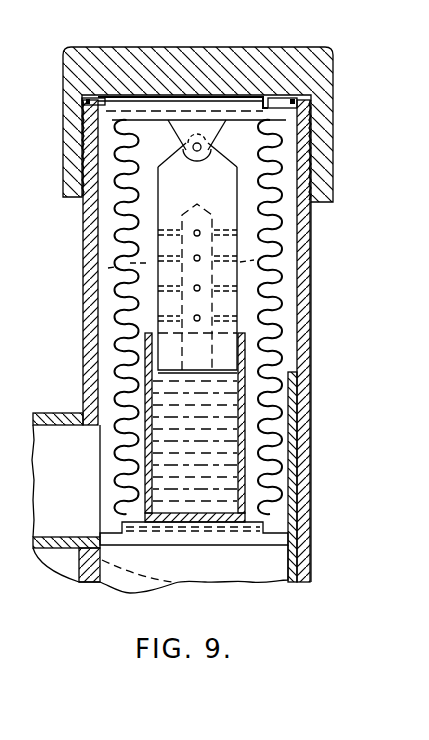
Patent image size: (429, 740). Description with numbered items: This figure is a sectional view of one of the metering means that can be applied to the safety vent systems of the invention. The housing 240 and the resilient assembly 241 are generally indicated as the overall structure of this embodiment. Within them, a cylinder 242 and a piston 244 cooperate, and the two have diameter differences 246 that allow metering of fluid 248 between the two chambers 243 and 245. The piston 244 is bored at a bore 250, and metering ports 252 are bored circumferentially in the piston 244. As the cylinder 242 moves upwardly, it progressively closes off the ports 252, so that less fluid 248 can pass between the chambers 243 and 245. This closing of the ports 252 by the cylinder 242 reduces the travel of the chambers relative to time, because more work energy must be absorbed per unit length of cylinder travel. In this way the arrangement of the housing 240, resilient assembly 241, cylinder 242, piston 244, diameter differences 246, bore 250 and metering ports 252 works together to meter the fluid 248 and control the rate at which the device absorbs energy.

The housing 240 is at (337, 213).
The resilient assembly 241 is at (281, 280).
The cylinder 242 is at (247, 458).
The chamber 243 is at (213, 417).
The piston 244 is at (158, 212).
The chamber 245 is at (277, 165).
The diameter differences 246 is at (243, 352).
The fluid 248 is at (132, 300).
The bore 250 is at (288, 250).
The metering ports 252 is at (168, 248).